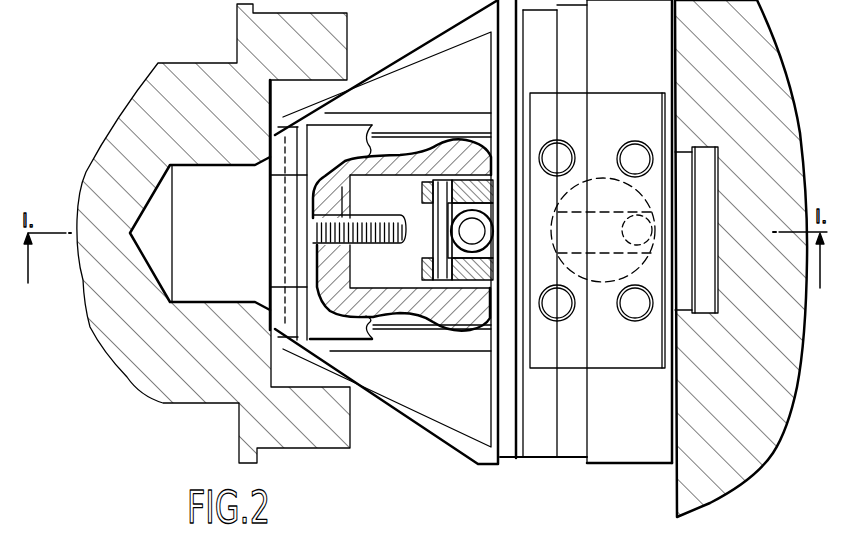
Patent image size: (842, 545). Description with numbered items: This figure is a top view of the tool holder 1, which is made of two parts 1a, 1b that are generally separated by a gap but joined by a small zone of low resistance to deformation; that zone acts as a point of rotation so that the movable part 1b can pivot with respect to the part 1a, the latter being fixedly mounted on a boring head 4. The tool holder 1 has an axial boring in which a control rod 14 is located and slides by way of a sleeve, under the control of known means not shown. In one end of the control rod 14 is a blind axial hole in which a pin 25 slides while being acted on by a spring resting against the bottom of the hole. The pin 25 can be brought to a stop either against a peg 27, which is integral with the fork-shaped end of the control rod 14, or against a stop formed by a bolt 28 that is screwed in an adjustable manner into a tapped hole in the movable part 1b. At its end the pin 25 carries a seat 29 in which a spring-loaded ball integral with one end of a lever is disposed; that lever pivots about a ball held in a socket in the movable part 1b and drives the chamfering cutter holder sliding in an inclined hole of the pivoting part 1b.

The tool holder 1 is at (741, 258).
The fixed part of the tool holder 1a is at (634, 442).
The movable part of the tool holder 1b is at (443, 389).
The boring head 4 is at (738, 364).
The control rod 14 is at (462, 182).
The pin 25 is at (488, 208).
The peg 27 is at (443, 194).
The bolt 28 is at (377, 243).
The seat 29 is at (460, 233).